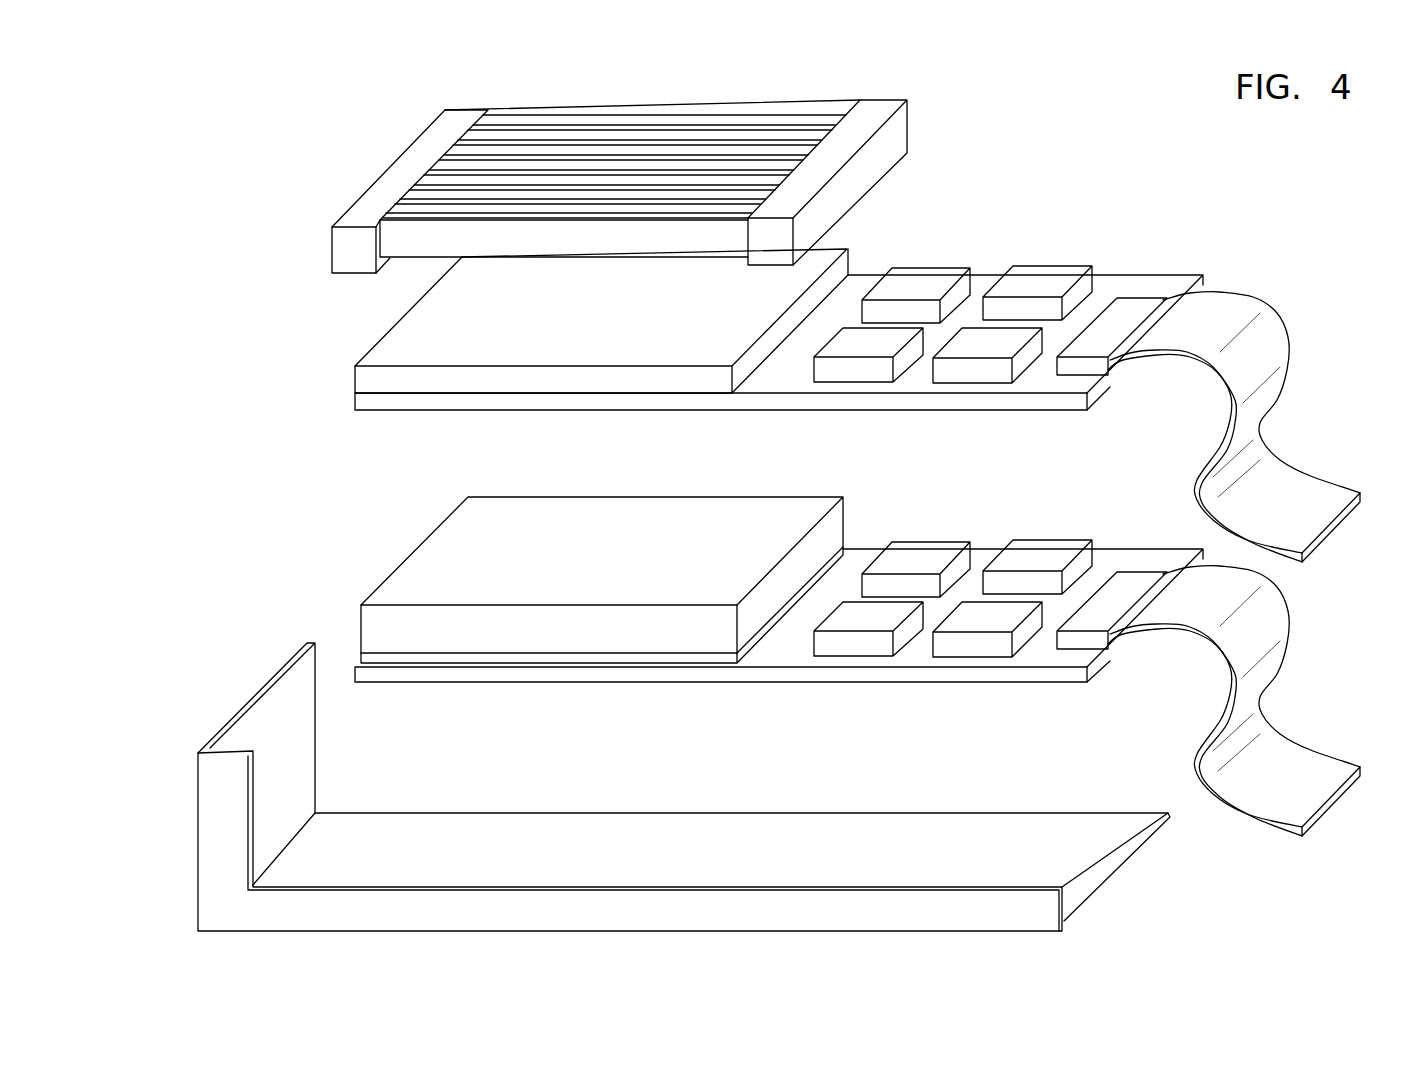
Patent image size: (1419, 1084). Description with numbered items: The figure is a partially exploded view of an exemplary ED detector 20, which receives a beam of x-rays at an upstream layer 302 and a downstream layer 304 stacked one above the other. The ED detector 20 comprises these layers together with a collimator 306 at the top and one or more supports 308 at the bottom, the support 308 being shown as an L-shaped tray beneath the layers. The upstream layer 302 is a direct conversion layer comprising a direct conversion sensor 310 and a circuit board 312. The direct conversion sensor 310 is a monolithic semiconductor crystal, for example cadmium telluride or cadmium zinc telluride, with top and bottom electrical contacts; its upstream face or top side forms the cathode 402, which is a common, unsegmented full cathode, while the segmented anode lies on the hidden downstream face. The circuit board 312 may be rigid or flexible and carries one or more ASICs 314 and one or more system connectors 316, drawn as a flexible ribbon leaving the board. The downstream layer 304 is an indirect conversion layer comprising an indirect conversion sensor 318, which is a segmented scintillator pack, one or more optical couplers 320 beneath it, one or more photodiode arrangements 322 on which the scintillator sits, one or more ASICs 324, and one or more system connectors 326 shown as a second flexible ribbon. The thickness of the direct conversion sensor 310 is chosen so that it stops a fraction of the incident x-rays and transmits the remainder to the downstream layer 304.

The ED detector 20 is at (1055, 122).
The upstream layer 302 is at (330, 380).
The downstream layer 304 is at (370, 550).
The collimator 306 is at (393, 163).
The support 308 is at (212, 812).
The direct conversion sensor 310 is at (712, 378).
The circuit board 312 is at (1145, 283).
The ASIC 314 is at (1048, 268).
The system connector 316 is at (1270, 302).
The indirect conversion sensor 318 is at (460, 520).
The optical coupler 320 is at (538, 653).
The photodiode arrangement 322 is at (713, 658).
The ASIC 324 is at (963, 645).
The system connector 326 is at (1323, 752).
The cathode 402 is at (820, 260).